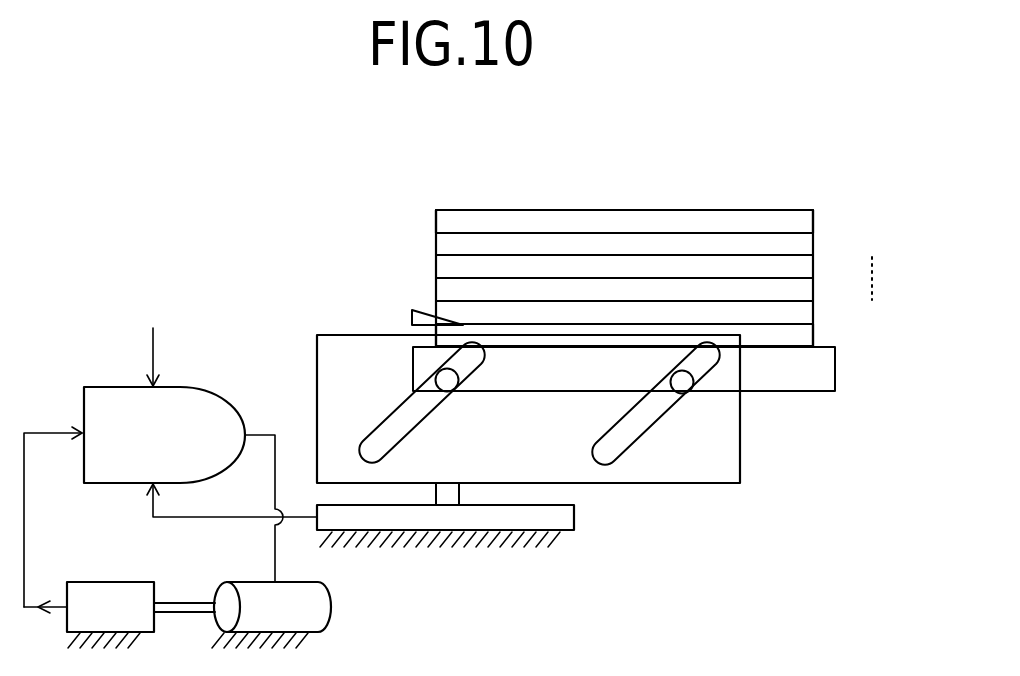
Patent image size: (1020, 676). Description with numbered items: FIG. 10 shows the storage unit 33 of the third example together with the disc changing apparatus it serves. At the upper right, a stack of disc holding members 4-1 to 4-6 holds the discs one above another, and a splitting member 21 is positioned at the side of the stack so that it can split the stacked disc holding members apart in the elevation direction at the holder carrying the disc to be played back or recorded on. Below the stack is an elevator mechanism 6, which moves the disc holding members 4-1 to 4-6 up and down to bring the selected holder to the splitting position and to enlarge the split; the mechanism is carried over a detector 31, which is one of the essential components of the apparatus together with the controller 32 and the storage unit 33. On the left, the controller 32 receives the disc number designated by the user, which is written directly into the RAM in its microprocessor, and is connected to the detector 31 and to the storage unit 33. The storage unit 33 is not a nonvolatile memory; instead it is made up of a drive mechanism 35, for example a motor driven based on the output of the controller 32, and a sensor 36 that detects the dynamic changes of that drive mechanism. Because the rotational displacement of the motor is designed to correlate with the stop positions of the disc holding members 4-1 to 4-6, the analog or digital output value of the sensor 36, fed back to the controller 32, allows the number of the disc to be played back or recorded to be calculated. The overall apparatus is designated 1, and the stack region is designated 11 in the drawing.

The disc changer apparatus 1 is at (462, 177).
The disc stack / magazine 11 is at (418, 255).
The disc holding member 4-1 is at (814, 224).
The disc holding member 4-6 is at (814, 335).
The splitting member 21 is at (424, 313).
The elevator mechanism 6 is at (752, 437).
The detector 31 is at (592, 518).
The controller 32 is at (221, 399).
The storage unit 33 is at (360, 591).
The drive mechanism 35 is at (238, 581).
The sensor 36 is at (109, 581).